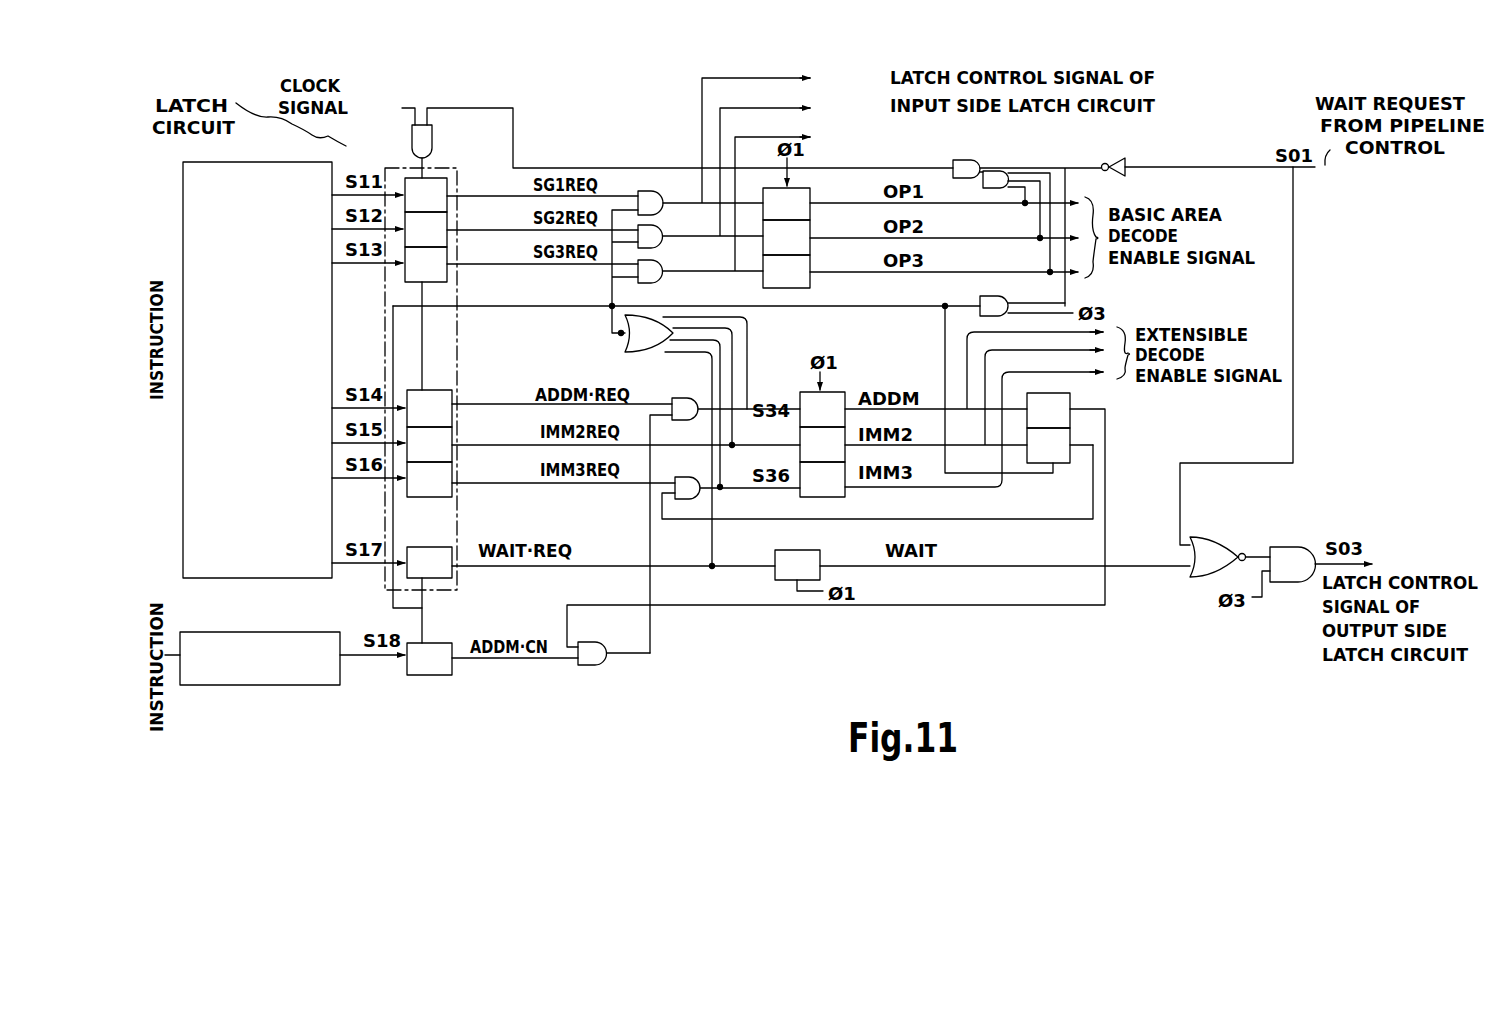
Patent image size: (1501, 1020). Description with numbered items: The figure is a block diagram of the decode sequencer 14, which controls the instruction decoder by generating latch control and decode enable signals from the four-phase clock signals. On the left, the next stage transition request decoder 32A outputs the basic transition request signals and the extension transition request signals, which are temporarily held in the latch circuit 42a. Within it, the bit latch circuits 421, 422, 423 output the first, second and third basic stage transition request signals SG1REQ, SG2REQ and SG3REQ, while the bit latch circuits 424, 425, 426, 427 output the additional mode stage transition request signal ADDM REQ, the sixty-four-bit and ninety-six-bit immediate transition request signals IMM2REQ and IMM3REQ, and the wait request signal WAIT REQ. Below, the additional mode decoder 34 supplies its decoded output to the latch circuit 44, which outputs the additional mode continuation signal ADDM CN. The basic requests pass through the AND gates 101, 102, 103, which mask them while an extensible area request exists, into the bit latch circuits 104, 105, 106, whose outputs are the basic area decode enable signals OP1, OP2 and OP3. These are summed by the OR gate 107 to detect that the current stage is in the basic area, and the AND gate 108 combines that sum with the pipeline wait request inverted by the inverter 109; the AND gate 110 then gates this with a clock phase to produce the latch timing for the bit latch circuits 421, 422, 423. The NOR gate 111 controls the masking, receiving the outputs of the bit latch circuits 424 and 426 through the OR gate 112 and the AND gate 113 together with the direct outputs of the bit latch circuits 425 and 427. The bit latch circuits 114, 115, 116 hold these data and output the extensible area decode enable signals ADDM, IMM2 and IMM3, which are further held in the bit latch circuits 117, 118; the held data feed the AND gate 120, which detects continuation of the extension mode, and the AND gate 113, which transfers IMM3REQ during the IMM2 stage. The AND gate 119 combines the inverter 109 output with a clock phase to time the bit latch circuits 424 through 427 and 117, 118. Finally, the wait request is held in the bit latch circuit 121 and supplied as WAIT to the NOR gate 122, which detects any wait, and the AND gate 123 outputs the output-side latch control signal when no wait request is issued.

The decode sequencer 14 is at (657, 122).
The next stage transition request decoder 32A is at (250, 161).
The latch circuit 42a is at (390, 160).
The additional mode decoder 34 is at (263, 632).
The latch circuit 44 is at (440, 640).
The bit latch circuit 421 is at (449, 184).
The bit latch circuit 422 is at (449, 218).
The bit latch circuit 423 is at (449, 252).
The bit latch circuit 424 is at (453, 396).
The bit latch circuit 425 is at (453, 433).
The bit latch circuit 426 is at (453, 468).
The bit latch circuit 427 is at (445, 545).
The AND gate 101 is at (664, 208).
The AND gate 102 is at (664, 242).
The AND gate 103 is at (664, 277).
The bit latch circuit 104 is at (811, 210).
The bit latch circuit 105 is at (811, 246).
The bit latch circuit 106 is at (811, 280).
The OR gate 107 is at (1005, 172).
The AND gate 108 is at (962, 160).
The inverter 109 is at (1114, 158).
The AND gate 110 is at (433, 130).
The NOR gate 111 is at (632, 352).
The OR gate 112 is at (704, 394).
The AND gate 113 is at (690, 460).
The bit latch circuit 114 is at (840, 392).
The bit latch circuit 115 is at (800, 440).
The bit latch circuit 116 is at (830, 498).
The bit latch circuit 117 is at (1071, 416).
The bit latch circuit 118 is at (1050, 465).
The AND gate 119 is at (1003, 296).
The AND gate 120 is at (604, 662).
The bit latch circuit 121 is at (821, 556).
The NOR gate 122 is at (1224, 537).
The AND gate 123 is at (1294, 546).